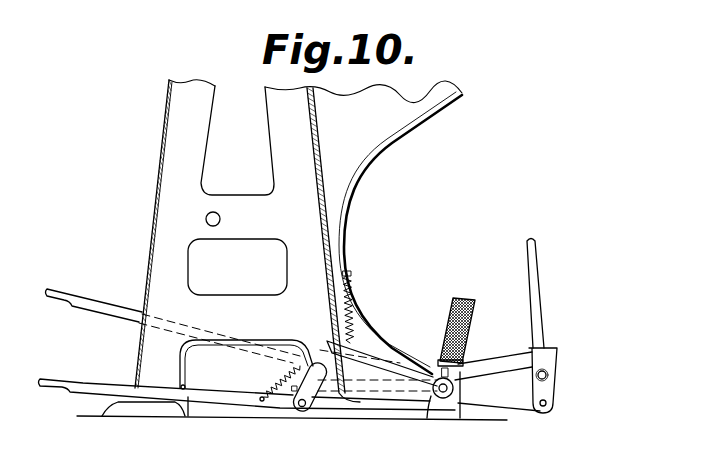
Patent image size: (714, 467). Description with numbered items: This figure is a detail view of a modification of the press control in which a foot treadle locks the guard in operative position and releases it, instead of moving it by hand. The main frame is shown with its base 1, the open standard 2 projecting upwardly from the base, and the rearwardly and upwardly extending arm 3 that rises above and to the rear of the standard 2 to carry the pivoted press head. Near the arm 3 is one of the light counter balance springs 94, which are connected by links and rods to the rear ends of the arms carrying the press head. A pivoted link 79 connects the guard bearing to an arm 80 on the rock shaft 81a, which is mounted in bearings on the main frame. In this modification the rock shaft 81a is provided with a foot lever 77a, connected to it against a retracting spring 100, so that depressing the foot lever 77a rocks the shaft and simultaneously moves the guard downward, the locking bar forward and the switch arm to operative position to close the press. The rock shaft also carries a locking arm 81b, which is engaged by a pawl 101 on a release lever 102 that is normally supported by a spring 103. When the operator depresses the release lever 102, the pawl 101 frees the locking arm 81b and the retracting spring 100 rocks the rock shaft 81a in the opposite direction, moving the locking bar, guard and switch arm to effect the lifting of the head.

The base 1 is at (155, 410).
The open standard 2 is at (166, 140).
The rearwardly and upwardly extending arm 3 is at (405, 100).
The foot lever 77a is at (70, 292).
The pivoted link 79 is at (538, 300).
The arm 80 is at (525, 403).
The rock shaft 81a is at (443, 395).
The locking arm 81b is at (397, 370).
The counter balance springs 94 is at (474, 318).
The retracting spring 100 is at (350, 313).
The pawl 101 is at (316, 389).
The release lever 102 is at (220, 399).
The spring 103 is at (280, 383).